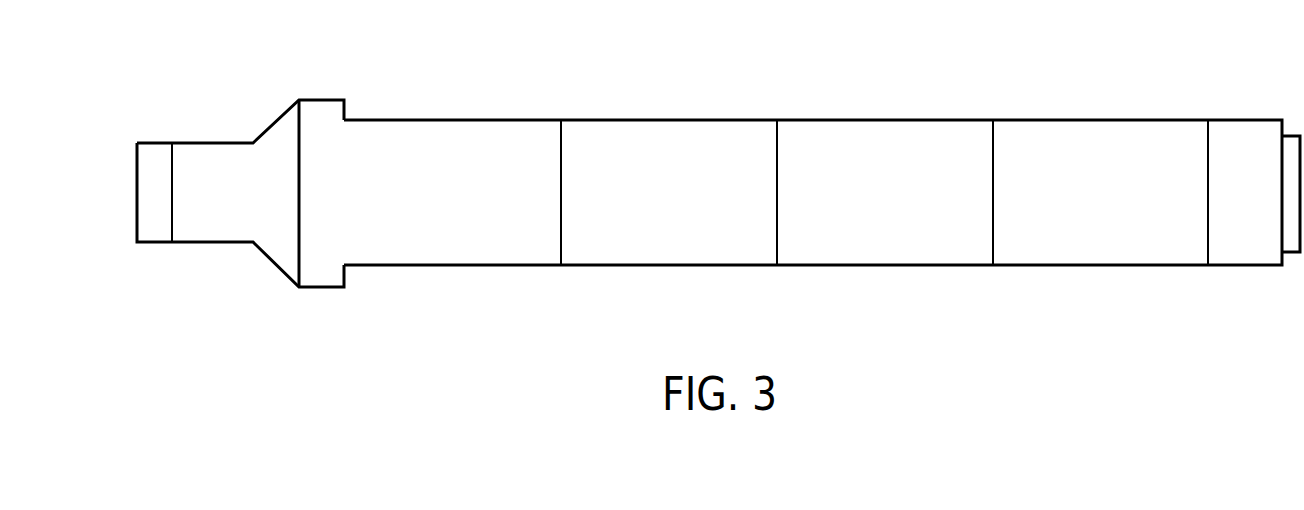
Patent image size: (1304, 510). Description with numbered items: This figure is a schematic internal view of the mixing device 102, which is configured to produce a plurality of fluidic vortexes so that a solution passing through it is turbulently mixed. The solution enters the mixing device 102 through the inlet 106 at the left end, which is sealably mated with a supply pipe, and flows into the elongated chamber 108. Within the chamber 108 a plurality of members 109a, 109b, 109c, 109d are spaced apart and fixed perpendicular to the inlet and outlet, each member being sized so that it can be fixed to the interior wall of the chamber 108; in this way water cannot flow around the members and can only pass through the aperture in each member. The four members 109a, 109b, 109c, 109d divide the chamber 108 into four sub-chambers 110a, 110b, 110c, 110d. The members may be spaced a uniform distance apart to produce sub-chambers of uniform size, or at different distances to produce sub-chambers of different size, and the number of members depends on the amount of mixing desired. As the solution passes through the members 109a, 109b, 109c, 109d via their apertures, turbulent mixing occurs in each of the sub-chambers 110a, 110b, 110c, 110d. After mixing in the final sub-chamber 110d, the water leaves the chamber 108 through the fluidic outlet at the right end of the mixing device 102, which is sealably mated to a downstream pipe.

The mixing device 102 is at (220, 86).
The inlet 106 is at (275, 267).
The chamber 108 is at (888, 120).
The first member 109a is at (561, 265).
The second member 109b is at (777, 265).
The third member 109c is at (993, 265).
The fourth member 109d is at (1208, 265).
The first sub-chamber 110a is at (446, 192).
The second sub-chamber 110b is at (662, 192).
The third sub-chamber 110c is at (878, 192).
The fourth sub-chamber 110d is at (1093, 192).